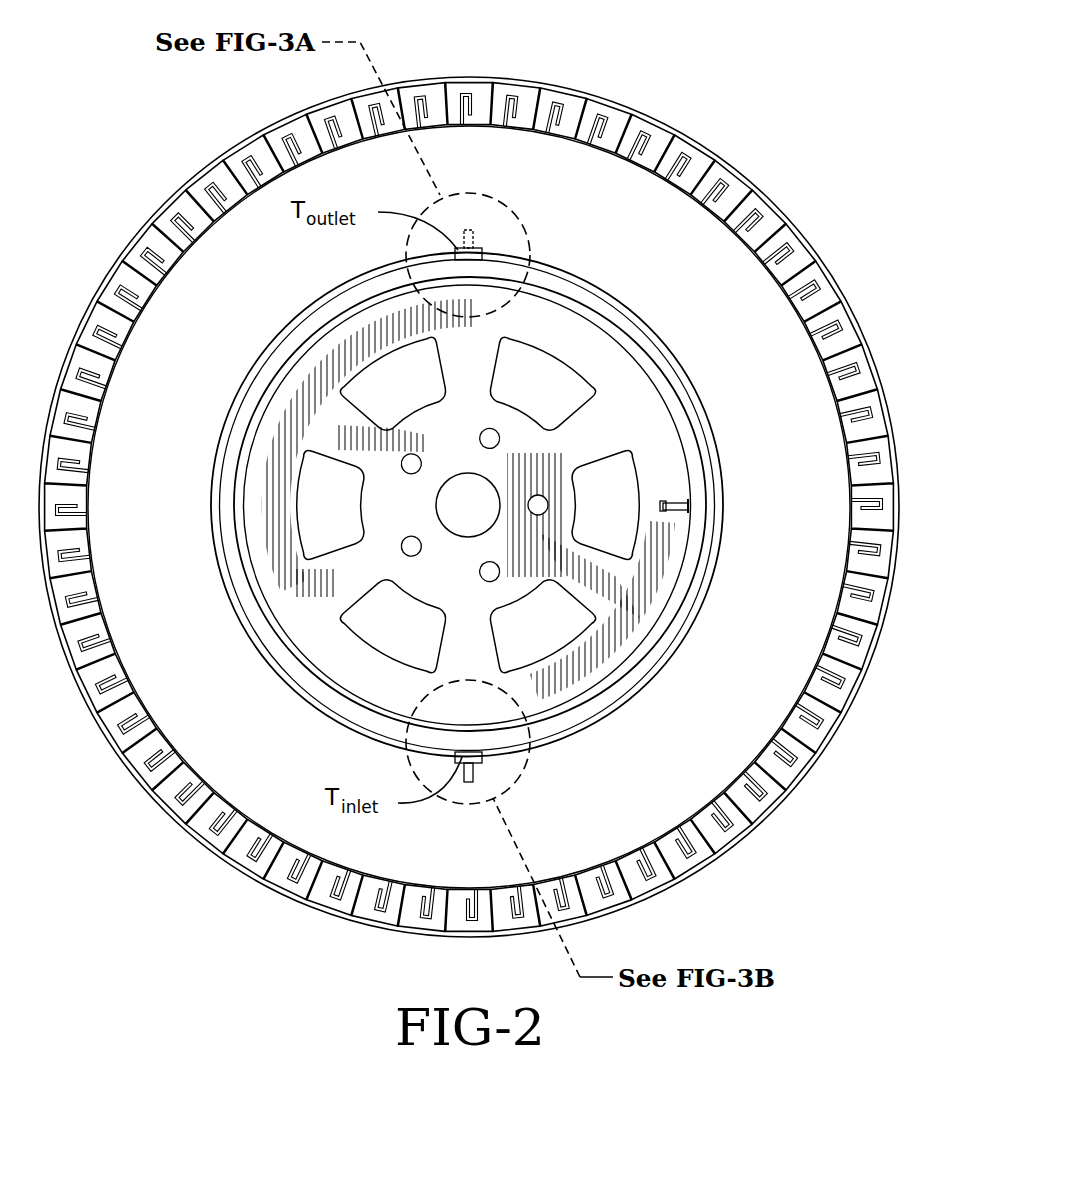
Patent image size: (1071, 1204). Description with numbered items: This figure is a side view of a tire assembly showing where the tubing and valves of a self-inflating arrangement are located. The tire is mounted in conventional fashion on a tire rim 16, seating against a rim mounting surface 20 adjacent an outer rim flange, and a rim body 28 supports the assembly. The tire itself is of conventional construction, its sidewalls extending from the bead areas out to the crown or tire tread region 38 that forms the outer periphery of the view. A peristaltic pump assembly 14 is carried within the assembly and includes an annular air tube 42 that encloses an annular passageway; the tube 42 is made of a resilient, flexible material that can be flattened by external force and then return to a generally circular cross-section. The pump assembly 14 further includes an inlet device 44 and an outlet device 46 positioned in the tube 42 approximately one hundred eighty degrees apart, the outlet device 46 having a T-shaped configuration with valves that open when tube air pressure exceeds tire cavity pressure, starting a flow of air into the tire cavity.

The peristaltic pump assembly 14 is at (658, 686).
The tire rim 16 is at (587, 351).
The rim mounting surface 20 is at (690, 236).
The rim body 28 is at (624, 422).
The tire tread region 38 is at (800, 211).
The annular air tube 42 is at (603, 722).
The inlet device 44 is at (460, 786).
The outlet device 46 is at (478, 241).